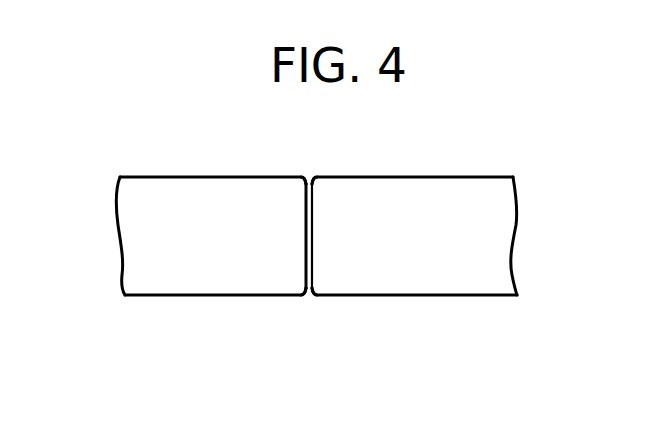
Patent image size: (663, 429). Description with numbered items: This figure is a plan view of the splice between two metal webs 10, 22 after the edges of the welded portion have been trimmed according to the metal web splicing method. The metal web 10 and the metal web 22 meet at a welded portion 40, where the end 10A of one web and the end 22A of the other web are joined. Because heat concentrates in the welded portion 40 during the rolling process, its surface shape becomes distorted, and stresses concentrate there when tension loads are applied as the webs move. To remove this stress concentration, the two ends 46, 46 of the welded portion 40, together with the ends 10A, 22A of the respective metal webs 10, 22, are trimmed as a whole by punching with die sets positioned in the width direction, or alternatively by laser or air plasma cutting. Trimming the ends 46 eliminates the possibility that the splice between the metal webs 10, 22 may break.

The metal web 10 is at (152, 193).
The end of metal web 10A is at (295, 228).
The metal web 22 is at (492, 198).
The end of metal web 22A is at (322, 215).
The welded portion 40 is at (305, 181).
The end of welded portion 46 is at (313, 181).